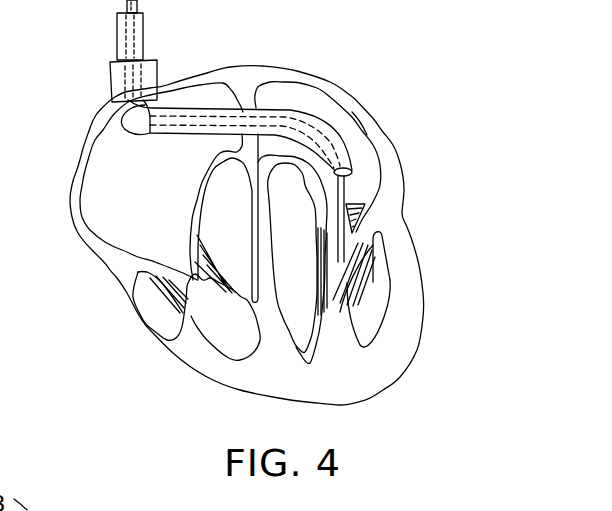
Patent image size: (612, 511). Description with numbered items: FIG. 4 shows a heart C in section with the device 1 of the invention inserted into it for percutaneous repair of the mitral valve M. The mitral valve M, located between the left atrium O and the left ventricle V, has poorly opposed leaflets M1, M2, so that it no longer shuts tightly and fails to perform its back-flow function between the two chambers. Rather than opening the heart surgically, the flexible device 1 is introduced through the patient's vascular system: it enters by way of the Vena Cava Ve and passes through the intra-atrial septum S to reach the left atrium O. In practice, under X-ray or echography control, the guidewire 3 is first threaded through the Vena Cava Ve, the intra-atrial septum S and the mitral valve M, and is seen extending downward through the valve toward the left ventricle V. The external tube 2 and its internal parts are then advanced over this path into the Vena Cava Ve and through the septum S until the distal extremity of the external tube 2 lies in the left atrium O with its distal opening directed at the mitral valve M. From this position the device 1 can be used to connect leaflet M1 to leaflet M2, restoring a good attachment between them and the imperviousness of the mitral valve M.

The device 1 is at (166, 147).
The external tube 2 is at (298, 112).
The guidewire 3 is at (357, 222).
The intra-atrial septum S is at (246, 94).
The left atrium O is at (352, 126).
The heart C is at (437, 87).
The mitral valve M is at (355, 208).
The leaflet M1 is at (333, 268).
The leaflet M2 is at (327, 257).
The left ventricle V is at (357, 323).
The Vena Cava Ve is at (108, 80).